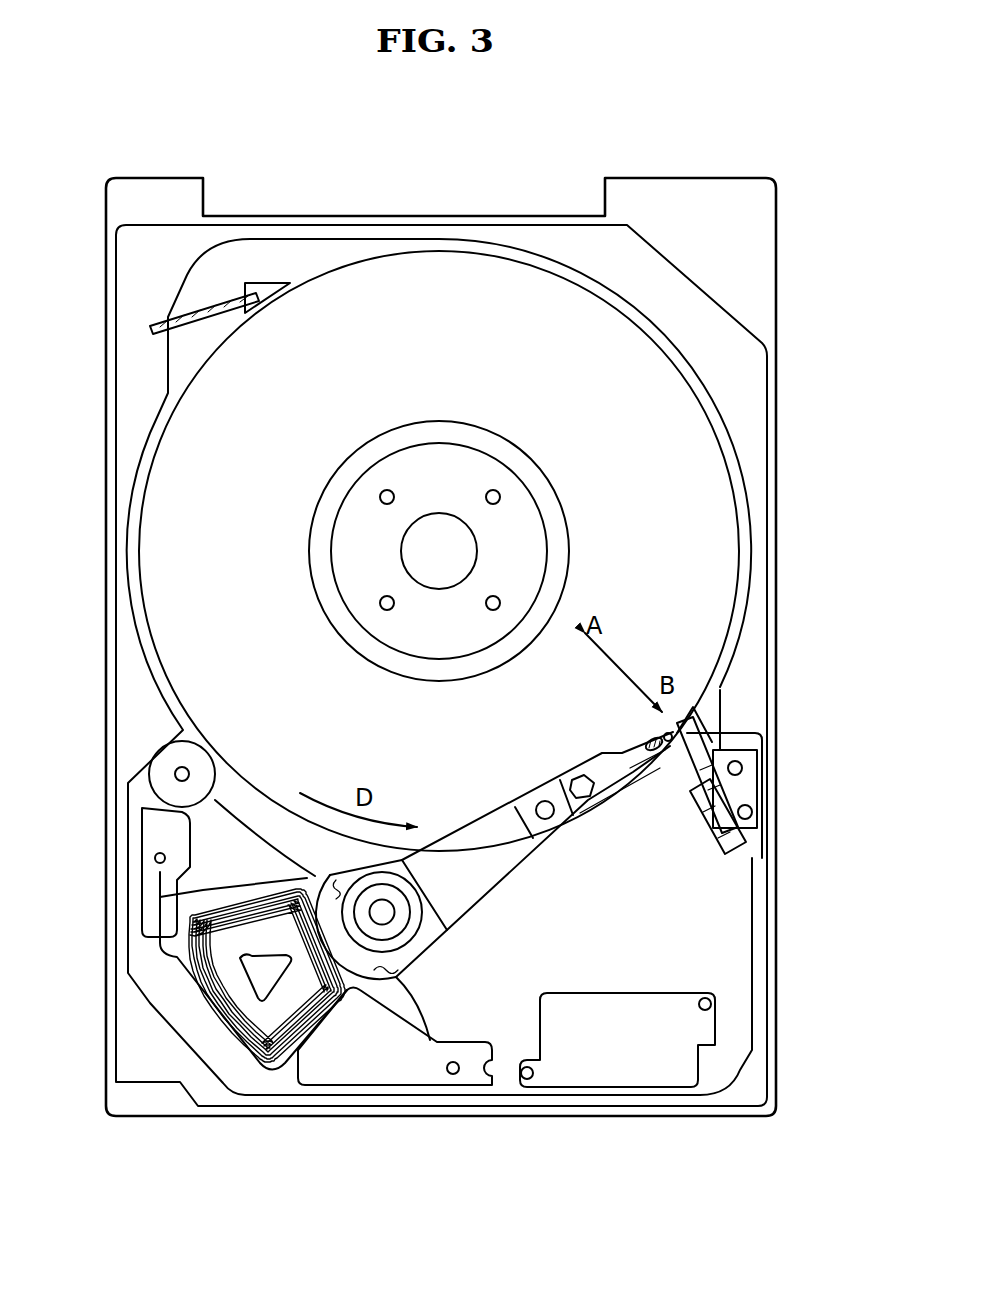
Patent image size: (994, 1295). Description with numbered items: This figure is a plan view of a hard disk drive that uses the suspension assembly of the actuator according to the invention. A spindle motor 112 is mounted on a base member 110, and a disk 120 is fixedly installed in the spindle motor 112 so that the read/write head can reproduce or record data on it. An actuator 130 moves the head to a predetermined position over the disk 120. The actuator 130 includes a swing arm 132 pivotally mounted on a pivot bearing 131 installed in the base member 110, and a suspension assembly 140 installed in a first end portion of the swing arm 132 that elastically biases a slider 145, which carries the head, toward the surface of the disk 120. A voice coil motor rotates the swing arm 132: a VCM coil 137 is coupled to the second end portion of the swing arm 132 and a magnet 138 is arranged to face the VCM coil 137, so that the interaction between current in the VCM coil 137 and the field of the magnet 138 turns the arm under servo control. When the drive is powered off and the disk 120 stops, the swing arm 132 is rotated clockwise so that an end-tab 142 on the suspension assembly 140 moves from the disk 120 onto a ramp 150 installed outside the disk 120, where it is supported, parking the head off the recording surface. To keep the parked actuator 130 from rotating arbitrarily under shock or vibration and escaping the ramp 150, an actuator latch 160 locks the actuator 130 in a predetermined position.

The base member 110 is at (757, 680).
The spindle motor 112 is at (453, 462).
The disk 120 is at (717, 480).
The actuator 130 is at (462, 953).
The pivot bearing 131 is at (385, 912).
The swing arm 132 is at (482, 875).
The VCM coil 137 is at (263, 1047).
The magnet 138 is at (358, 1070).
The suspension assembly 140 is at (613, 778).
The end-tab 142 is at (707, 727).
The slider 145 is at (712, 777).
The ramp 150 is at (708, 762).
The actuator latch 160 is at (148, 870).